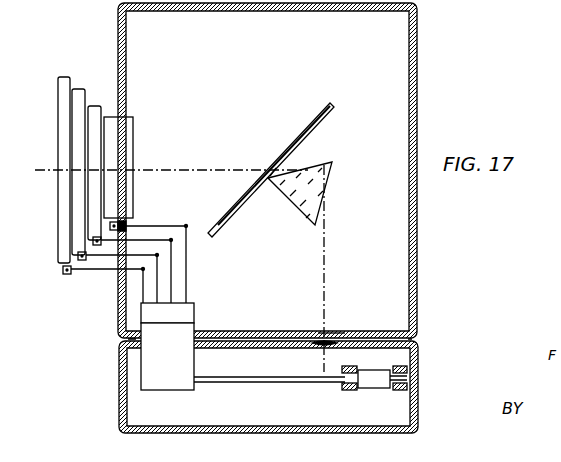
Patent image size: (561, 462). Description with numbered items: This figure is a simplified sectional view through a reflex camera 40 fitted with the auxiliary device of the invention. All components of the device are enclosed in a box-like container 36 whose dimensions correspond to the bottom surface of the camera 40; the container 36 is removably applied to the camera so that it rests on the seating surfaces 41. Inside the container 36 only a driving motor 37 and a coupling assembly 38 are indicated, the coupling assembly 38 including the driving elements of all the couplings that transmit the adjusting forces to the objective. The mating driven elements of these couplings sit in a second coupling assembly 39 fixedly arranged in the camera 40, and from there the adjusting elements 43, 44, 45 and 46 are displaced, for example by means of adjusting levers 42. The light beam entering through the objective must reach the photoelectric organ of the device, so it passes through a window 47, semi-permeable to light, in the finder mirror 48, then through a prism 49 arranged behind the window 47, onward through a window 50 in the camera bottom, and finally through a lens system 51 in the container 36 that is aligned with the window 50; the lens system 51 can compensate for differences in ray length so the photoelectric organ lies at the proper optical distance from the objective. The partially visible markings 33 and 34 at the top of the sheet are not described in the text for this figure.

The section line arrow 33 is at (475, 4).
The section line arrow 34 is at (496, 0).
The container 36 is at (412, 404).
The driving motor 37 is at (300, 391).
The coupling assembly 38 is at (165, 378).
The coupling assembly 39 is at (194, 311).
The reflex camera 40 is at (408, 60).
The seating surfaces 41 is at (126, 340).
The adjusting levers 42 is at (159, 230).
The adjusting element 43 is at (110, 117).
The adjusting element 44 is at (94, 106).
The adjusting element 45 is at (78, 89).
The adjusting element 46 is at (61, 77).
The window 47 is at (273, 165).
The finder mirror 48 is at (333, 105).
The prism 49 is at (327, 173).
The window 50 is at (330, 333).
The lens system 51 is at (320, 346).